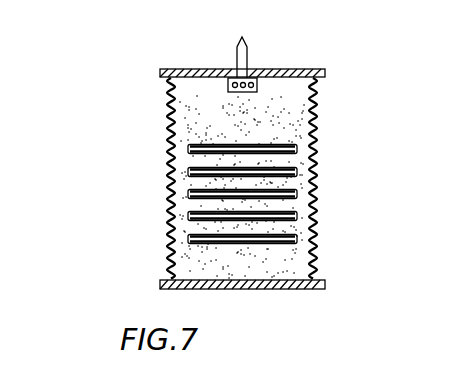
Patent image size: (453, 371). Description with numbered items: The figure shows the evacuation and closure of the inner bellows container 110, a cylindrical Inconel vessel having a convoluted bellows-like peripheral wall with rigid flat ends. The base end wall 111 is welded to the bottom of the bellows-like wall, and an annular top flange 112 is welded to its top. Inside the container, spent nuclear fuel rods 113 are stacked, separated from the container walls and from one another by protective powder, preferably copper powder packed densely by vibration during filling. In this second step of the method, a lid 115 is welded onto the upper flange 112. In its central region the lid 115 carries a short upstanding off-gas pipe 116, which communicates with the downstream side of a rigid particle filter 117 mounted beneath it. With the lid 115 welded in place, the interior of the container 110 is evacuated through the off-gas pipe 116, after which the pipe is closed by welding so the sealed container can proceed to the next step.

The inner bellows container 110 is at (319, 163).
The base end wall 111 is at (282, 290).
The annular top flange 112 is at (170, 69).
The spent nuclear fuel rods 113 is at (192, 148).
The lid 115 is at (290, 68).
The off-gas pipe 116 is at (248, 45).
The rigid particle filter 117 is at (260, 90).